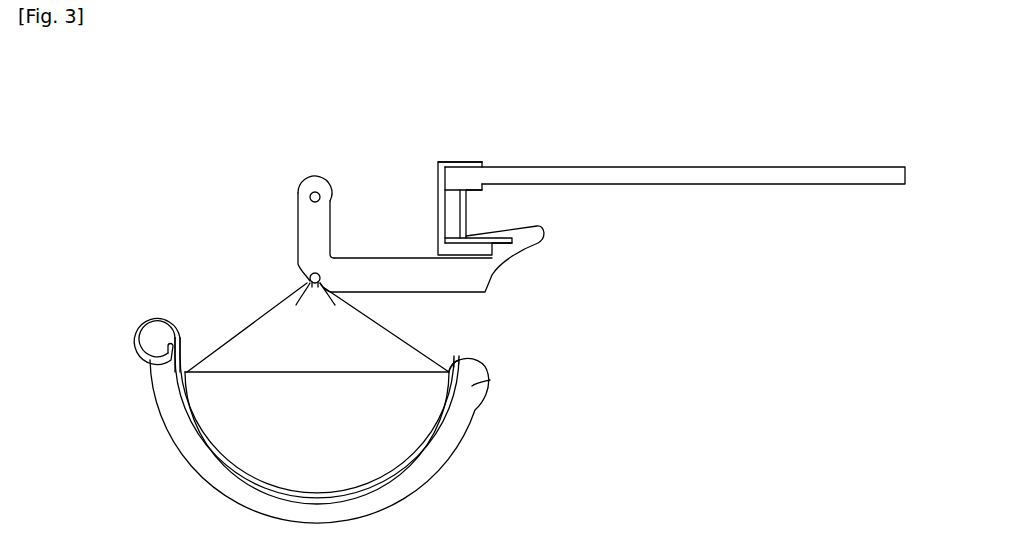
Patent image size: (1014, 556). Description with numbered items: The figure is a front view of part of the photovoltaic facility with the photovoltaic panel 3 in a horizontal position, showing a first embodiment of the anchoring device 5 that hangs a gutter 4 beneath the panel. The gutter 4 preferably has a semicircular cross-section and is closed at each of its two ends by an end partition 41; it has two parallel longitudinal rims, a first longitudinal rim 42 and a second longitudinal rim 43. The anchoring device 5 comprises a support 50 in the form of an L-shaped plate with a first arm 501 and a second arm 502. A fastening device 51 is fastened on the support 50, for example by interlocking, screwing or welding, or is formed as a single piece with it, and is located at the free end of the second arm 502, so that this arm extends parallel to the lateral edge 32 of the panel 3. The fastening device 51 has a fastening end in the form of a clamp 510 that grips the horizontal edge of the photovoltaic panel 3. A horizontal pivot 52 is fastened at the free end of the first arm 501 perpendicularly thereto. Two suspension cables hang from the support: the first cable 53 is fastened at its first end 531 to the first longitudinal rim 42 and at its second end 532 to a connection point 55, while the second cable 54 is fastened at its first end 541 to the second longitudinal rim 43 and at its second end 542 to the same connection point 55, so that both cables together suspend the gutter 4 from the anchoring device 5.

The photovoltaic panel 3 is at (675, 145).
The lateral edge 32 is at (675, 177).
The gutter 4 is at (458, 492).
The end partition 41 is at (326, 431).
The first longitudinal rim 42 is at (137, 340).
The second longitudinal rim 43 is at (490, 380).
The anchoring device 5 is at (317, 125).
The support 50 is at (382, 220).
The first arm 501 is at (313, 237).
The second arm 502 is at (398, 273).
The fastening device 51 is at (436, 192).
The clamp 510 is at (451, 161).
The pivot 52 is at (304, 186).
The first cable 53 is at (250, 323).
The first end of the first cable 531 is at (187, 368).
The second end of the first cable 532 is at (305, 287).
The second cable 54 is at (387, 328).
The first end of the second cable 541 is at (447, 357).
The second end of the second cable 542 is at (322, 287).
The connection point 55 is at (313, 287).